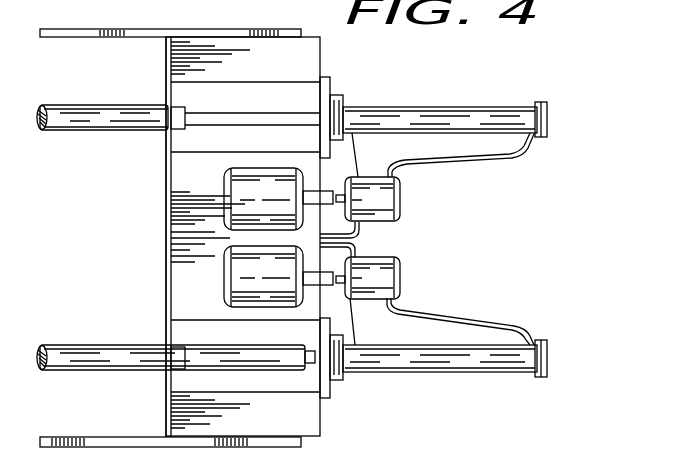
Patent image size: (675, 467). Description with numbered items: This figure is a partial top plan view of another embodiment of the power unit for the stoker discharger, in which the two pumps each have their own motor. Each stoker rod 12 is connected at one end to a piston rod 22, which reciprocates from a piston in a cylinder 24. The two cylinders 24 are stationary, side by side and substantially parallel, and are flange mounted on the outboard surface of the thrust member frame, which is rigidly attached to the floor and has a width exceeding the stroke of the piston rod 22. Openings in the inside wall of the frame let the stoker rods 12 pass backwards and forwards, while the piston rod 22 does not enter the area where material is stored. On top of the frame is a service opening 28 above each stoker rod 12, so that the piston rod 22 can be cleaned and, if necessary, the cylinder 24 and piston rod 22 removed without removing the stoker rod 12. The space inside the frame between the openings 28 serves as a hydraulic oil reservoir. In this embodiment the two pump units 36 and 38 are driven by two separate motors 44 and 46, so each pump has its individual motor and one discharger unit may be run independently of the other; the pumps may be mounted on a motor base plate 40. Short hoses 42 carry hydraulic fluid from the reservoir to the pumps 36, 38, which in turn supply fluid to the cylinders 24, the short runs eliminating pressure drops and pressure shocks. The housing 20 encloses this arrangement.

The housing 20 is at (196, 420).
The stoker rod 12 is at (60, 127).
The piston rod 22 is at (212, 118).
The cylinder 24 is at (483, 113).
The service opening 28 is at (187, 140).
The pump 36 is at (392, 198).
The pump 38 is at (383, 272).
The motor base plate 40 is at (180, 198).
The hose 42 is at (485, 152).
The motor 44 is at (240, 210).
The motor 46 is at (240, 263).